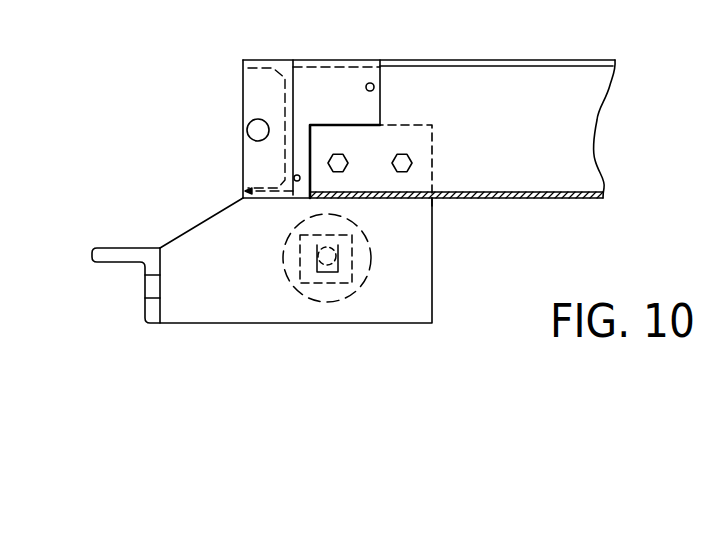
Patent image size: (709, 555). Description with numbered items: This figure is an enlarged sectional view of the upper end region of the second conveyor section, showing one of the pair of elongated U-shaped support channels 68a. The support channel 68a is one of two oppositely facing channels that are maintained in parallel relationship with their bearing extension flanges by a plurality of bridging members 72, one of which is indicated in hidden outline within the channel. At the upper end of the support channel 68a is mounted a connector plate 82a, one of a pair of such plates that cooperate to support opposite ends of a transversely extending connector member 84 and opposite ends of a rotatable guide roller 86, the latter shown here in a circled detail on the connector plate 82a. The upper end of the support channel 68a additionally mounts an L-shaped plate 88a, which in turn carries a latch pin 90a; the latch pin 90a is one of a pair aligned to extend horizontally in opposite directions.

The support channel 68a is at (555, 115).
The bridging member 72 is at (298, 96).
The connector plate 82a is at (422, 280).
The connector member 84 is at (135, 247).
The rotatable guide roller 86 is at (372, 257).
The L-shaped plate 88a is at (370, 98).
The latch pin 90a is at (258, 130).